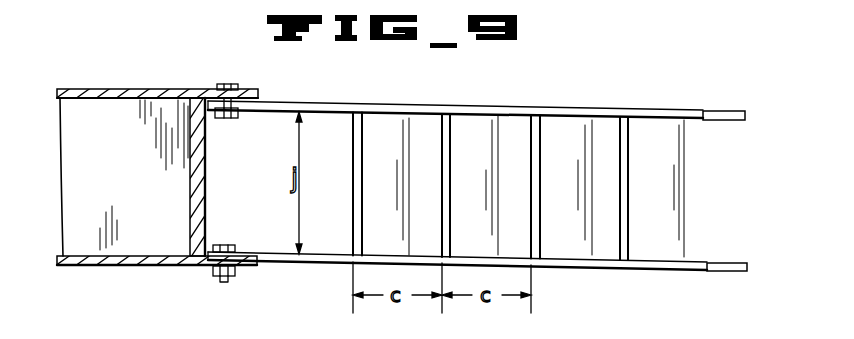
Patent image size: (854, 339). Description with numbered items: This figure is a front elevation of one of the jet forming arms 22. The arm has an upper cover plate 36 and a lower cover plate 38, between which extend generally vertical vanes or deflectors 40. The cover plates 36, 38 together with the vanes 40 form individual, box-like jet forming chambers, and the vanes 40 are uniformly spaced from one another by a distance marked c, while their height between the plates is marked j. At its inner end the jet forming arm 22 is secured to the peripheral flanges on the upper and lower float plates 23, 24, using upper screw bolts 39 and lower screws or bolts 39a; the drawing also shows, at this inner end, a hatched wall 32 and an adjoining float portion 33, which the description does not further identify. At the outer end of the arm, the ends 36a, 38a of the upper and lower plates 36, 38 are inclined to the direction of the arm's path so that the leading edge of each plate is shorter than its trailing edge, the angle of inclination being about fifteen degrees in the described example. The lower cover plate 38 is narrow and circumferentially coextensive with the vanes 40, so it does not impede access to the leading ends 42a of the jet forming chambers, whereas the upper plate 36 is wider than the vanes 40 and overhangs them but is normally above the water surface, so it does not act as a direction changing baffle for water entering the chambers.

The jet forming arm 22 is at (655, 108).
The upper float plate 23 is at (77, 96).
The lower float plate 24 is at (77, 264).
The end wall 32 is at (198, 194).
The tank 33 is at (117, 180).
The upper cover plate 36 is at (548, 111).
The end of upper plate 36a is at (747, 116).
The lower cover plate 38 is at (659, 268).
The end of lower plate 38a is at (760, 267).
The upper screw bolt 39 is at (224, 84).
The lower screw or bolt 39a is at (226, 281).
The vane 40 is at (463, 122).
The leading end of jet forming chamber 42a is at (624, 250).